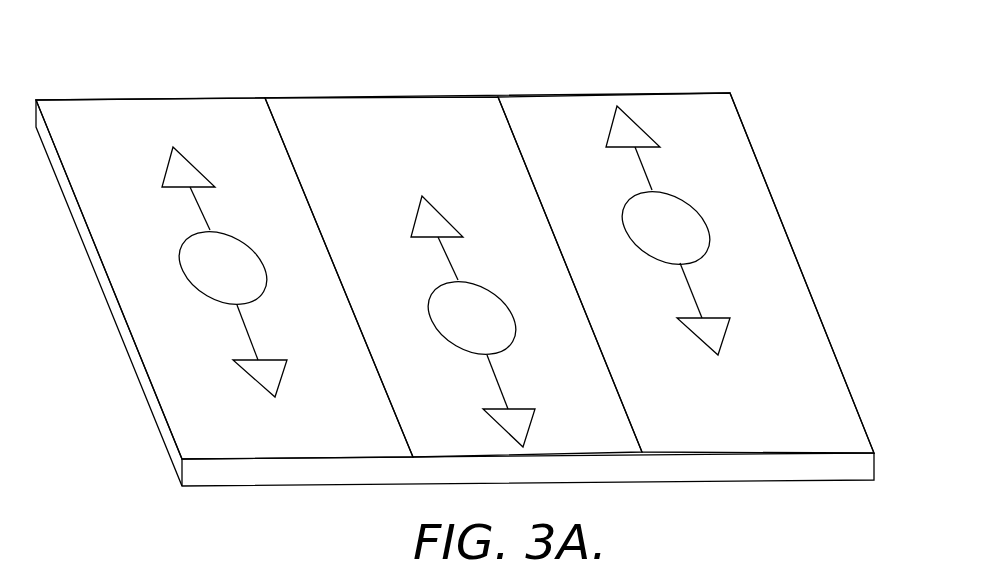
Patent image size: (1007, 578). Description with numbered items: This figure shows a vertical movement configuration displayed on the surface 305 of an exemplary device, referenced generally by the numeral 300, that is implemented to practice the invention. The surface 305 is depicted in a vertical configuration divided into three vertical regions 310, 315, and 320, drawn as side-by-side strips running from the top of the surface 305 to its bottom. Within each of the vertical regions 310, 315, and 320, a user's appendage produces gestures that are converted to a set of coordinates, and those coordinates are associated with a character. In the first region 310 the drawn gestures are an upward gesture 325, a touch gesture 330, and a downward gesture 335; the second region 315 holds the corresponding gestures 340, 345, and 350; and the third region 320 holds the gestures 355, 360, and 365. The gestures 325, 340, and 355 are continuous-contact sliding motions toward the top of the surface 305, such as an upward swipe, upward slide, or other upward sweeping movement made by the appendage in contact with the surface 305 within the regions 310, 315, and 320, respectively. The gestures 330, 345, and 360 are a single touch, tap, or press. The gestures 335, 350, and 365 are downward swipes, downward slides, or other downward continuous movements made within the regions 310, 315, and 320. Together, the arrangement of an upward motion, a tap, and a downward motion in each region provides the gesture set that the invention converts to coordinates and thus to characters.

The device 300 is at (243, 47).
The surface 305 is at (263, 487).
The vertical region 310 is at (147, 98).
The vertical region 315 is at (383, 95).
The vertical region 320 is at (607, 95).
The gesture 325 is at (215, 150).
The gesture 330 is at (262, 258).
The gesture 335 is at (302, 350).
The gesture 340 is at (464, 198).
The gesture 345 is at (515, 315).
The gesture 350 is at (535, 410).
The gesture 355 is at (668, 121).
The gesture 360 is at (725, 210).
The gesture 365 is at (745, 313).